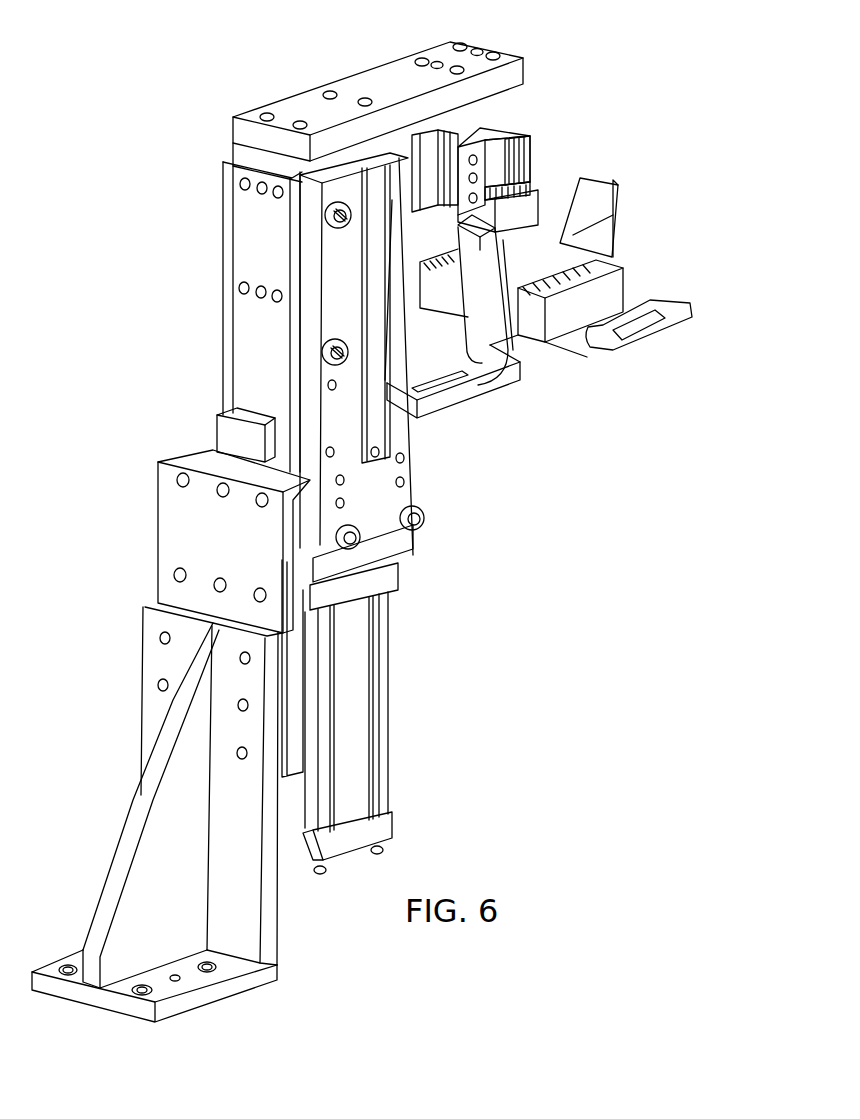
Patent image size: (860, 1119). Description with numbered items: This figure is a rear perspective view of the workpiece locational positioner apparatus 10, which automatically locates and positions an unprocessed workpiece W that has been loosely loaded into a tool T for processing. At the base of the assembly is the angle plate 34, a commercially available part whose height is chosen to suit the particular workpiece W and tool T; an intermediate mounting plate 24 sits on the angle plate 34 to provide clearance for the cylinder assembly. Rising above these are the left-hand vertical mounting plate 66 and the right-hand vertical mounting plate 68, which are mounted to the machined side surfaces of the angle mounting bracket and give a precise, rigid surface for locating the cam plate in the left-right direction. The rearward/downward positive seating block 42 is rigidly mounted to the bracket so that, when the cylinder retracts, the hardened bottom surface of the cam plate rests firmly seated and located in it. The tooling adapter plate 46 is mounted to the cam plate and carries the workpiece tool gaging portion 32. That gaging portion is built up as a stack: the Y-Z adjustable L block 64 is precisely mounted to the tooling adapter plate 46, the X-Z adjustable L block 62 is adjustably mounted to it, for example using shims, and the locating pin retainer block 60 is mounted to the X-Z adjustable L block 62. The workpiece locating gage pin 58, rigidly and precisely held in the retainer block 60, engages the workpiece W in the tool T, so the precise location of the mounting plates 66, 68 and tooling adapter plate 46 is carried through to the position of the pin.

The workpiece locational positioner apparatus 10 is at (415, 548).
The intermediate mounting plate 24 is at (158, 549).
The workpiece tool gaging portion 32 is at (539, 170).
The angle plate 34 is at (118, 847).
The rearward/downward positive seating block 42 is at (215, 432).
The tooling adapter plate 46 is at (491, 44).
The workpiece locating gage pin 58 is at (534, 247).
The locating pin retainer block 60 is at (542, 206).
The X-Z adjustable L block 62 is at (538, 133).
The Y-Z adjustable L block 64 is at (516, 111).
The vertical mounting plate (left hand) 66 is at (222, 274).
The vertical mounting plate (right hand) 68 is at (417, 446).
The tool T is at (557, 382).
The workpiece W is at (629, 276).